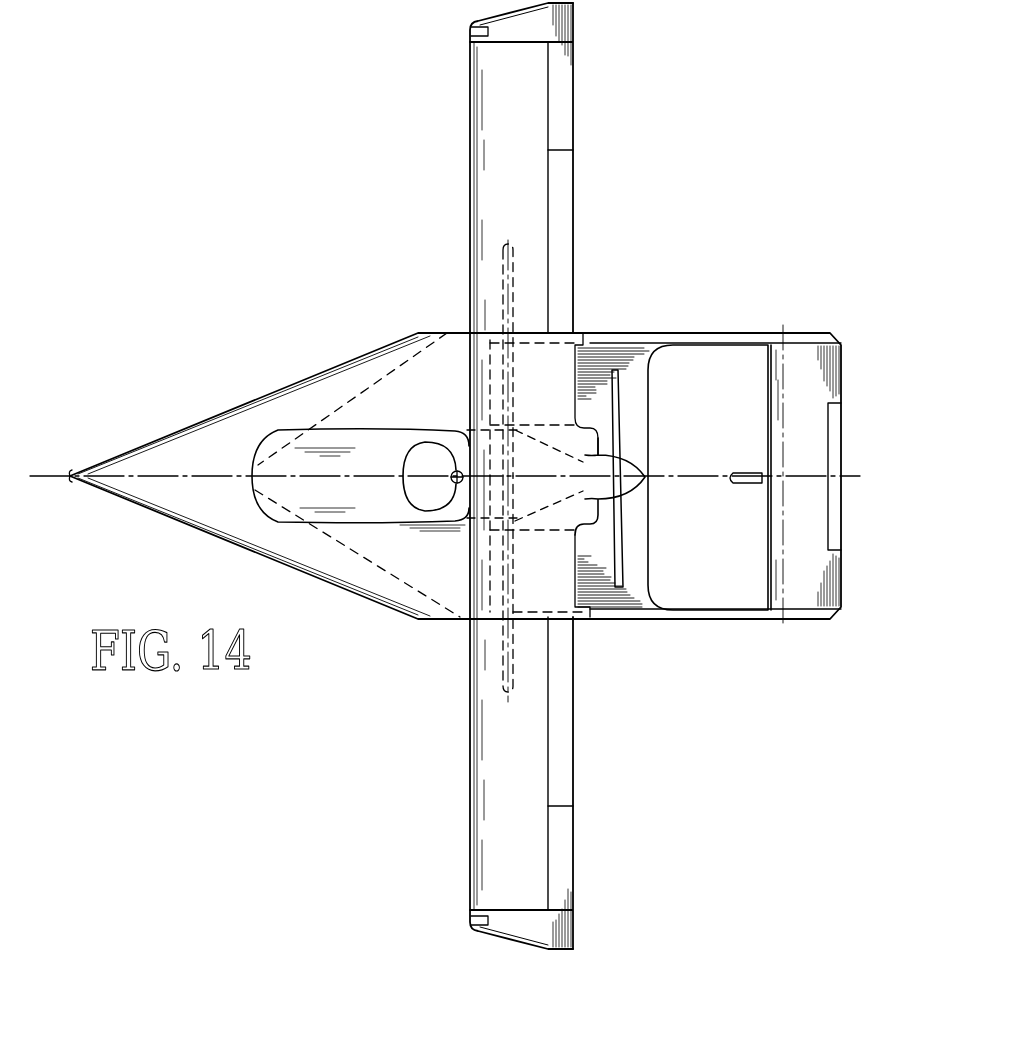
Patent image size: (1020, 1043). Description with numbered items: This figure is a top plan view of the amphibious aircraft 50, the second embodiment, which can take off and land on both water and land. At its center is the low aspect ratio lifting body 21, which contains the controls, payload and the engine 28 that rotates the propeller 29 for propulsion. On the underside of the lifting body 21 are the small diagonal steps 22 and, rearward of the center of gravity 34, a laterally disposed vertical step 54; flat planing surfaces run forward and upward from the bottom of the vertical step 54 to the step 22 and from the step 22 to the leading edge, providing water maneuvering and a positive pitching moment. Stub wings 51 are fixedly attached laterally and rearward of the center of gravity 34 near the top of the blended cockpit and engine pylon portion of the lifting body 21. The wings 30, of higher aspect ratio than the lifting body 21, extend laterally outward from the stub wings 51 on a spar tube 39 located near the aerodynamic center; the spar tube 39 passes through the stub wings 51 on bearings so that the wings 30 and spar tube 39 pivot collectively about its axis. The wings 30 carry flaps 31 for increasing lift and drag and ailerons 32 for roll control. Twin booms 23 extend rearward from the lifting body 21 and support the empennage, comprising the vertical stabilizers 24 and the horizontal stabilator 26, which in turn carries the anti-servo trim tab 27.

The amphibious aircraft 50 is at (273, 311).
The diagonal step 22 is at (373, 390).
The lifting body 21 is at (417, 480).
The center of gravity 34 is at (412, 459).
The spar tube 39 is at (500, 396).
The vertical step 54 is at (490, 559).
The stub wings 51 is at (569, 475).
The wings 30 is at (521, 476).
The flaps 31 is at (566, 238).
The ailerons 32 is at (568, 105).
The twin booms 23 is at (720, 333).
The vertical stabilizers 24 is at (805, 335).
The horizontal stabilator 26 is at (773, 450).
The anti-servo trim tab 27 is at (837, 438).
The engine 28 is at (592, 453).
The propeller 29 is at (622, 417).